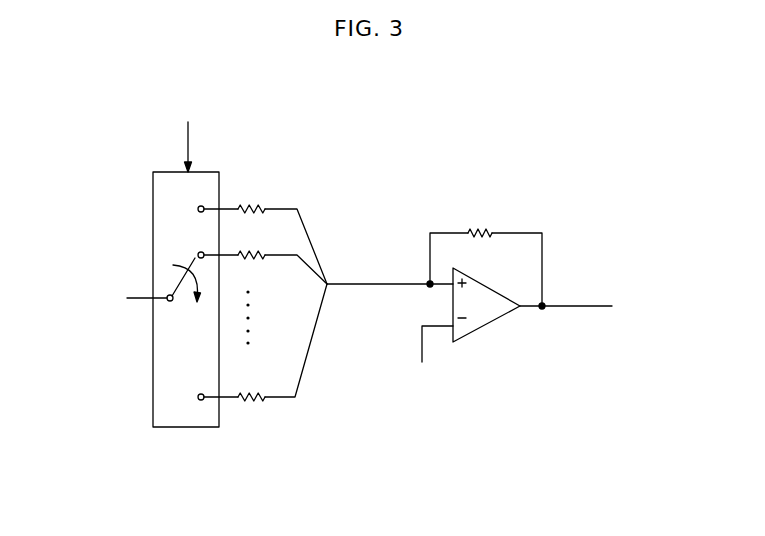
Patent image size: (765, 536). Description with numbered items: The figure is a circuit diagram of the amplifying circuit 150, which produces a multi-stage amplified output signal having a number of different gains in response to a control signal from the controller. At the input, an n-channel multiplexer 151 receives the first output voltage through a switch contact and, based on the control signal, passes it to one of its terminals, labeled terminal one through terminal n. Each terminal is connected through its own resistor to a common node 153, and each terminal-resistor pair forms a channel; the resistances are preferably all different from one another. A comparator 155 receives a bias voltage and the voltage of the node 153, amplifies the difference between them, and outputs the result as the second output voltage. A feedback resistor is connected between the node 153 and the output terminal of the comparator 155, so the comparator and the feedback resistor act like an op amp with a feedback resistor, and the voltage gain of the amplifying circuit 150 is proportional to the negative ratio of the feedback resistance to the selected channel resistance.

The amplifying circuit 150 is at (508, 140).
The n-channel multiplexer 151 is at (200, 170).
The node 153 is at (427, 280).
The comparator 155 is at (488, 287).